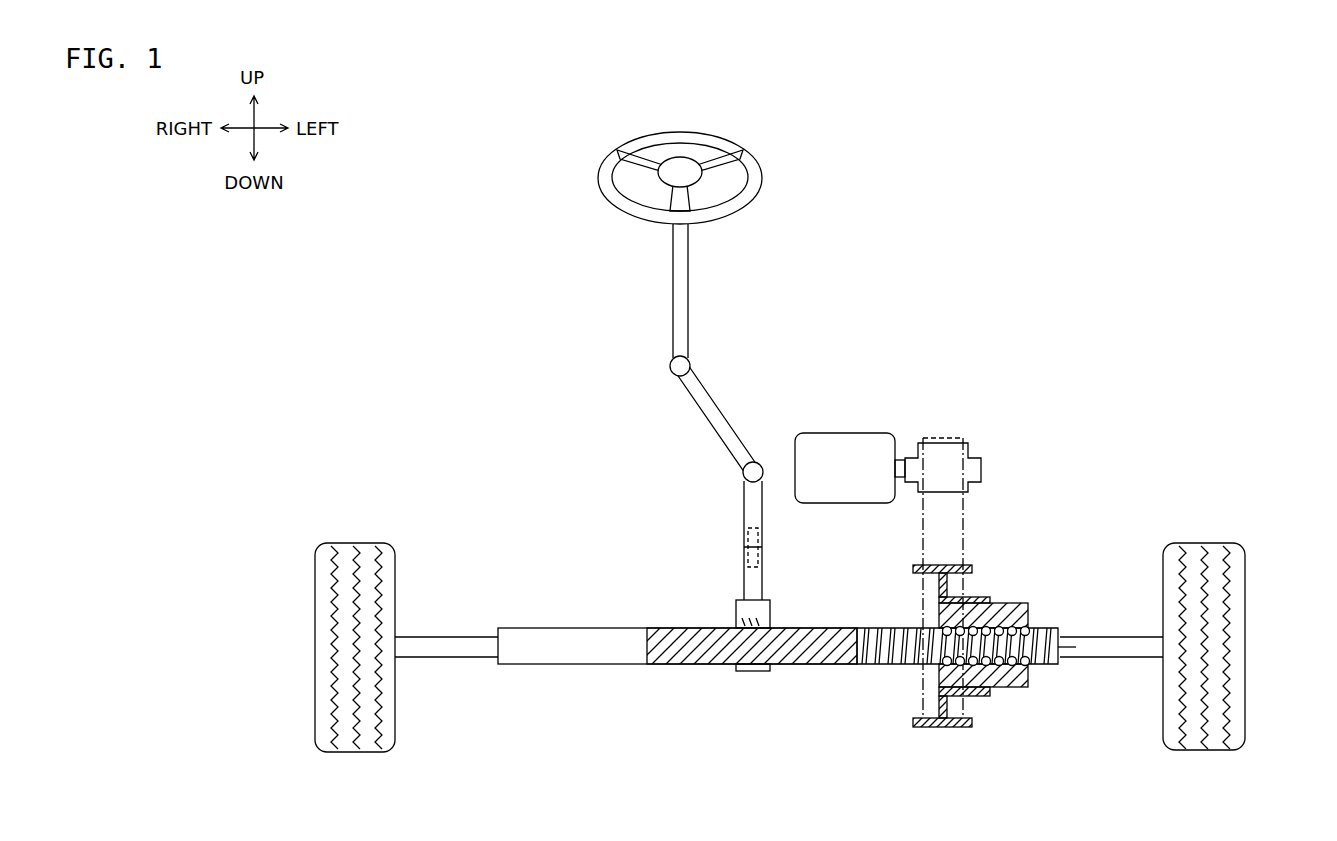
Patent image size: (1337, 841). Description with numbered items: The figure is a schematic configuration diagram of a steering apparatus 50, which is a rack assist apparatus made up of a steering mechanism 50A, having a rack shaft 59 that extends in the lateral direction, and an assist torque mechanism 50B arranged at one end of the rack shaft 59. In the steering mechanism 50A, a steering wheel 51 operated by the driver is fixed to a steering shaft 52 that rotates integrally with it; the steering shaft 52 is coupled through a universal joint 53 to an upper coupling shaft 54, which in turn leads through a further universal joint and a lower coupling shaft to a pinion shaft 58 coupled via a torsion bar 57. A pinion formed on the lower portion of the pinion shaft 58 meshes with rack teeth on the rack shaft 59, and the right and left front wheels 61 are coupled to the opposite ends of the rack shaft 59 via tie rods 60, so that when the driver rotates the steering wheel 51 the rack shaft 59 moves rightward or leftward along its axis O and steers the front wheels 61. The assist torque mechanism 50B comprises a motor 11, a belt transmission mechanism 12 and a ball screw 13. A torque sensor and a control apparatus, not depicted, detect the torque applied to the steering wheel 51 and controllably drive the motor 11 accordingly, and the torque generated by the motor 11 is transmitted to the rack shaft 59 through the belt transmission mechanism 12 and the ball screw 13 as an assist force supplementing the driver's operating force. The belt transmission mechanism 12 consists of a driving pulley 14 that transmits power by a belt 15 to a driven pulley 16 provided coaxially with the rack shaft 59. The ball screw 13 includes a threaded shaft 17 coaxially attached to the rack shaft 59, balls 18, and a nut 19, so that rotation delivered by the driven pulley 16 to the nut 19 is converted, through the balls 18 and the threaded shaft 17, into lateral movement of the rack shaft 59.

The motor 11 is at (848, 440).
The belt transmission mechanism 12 is at (945, 585).
The ball screw 13 is at (976, 699).
The driving pulley 14 is at (946, 440).
The belt 15 is at (966, 525).
The driven pulley 16 is at (913, 723).
The threaded shaft 17 is at (1052, 665).
The balls 18 is at (1030, 688).
The nut 19 is at (1000, 696).
The steering apparatus 50 is at (538, 292).
The steering mechanism 50A is at (837, 276).
The assist torque mechanism 50B is at (1041, 442).
The steering wheel 51 is at (756, 176).
The steering shaft 52 is at (686, 275).
The universal joint 53 is at (690, 360).
The upper coupling shaft 54 is at (715, 408).
The torsion bar 57 is at (746, 538).
The pinion shaft 58 is at (744, 585).
The rack shaft 59 is at (600, 665).
The tie rods 60 is at (455, 637).
The front wheels 61 is at (315, 585).
The axis O is at (1068, 645).